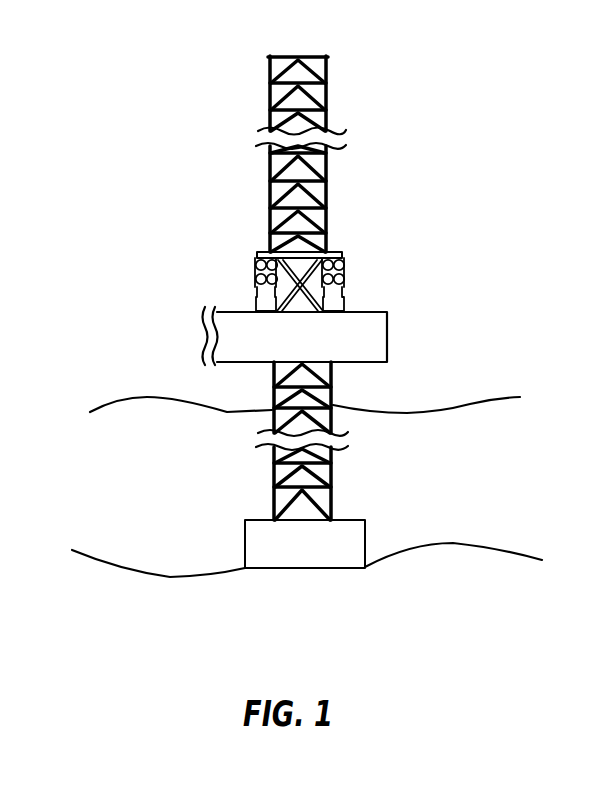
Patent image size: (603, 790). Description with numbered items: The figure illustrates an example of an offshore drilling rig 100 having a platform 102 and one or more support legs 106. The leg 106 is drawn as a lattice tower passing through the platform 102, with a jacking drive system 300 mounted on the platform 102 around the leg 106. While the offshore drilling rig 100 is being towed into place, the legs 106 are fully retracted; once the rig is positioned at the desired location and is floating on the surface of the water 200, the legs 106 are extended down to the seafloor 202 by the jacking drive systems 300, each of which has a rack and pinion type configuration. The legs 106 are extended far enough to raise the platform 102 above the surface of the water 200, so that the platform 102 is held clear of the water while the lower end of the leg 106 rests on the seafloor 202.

The offshore drilling rig 100 is at (160, 88).
The support leg 106 is at (329, 228).
The jacking drive system 300 is at (345, 268).
The platform 102 is at (362, 336).
The surface of the water 200 is at (457, 405).
The seafloor 202 is at (487, 547).